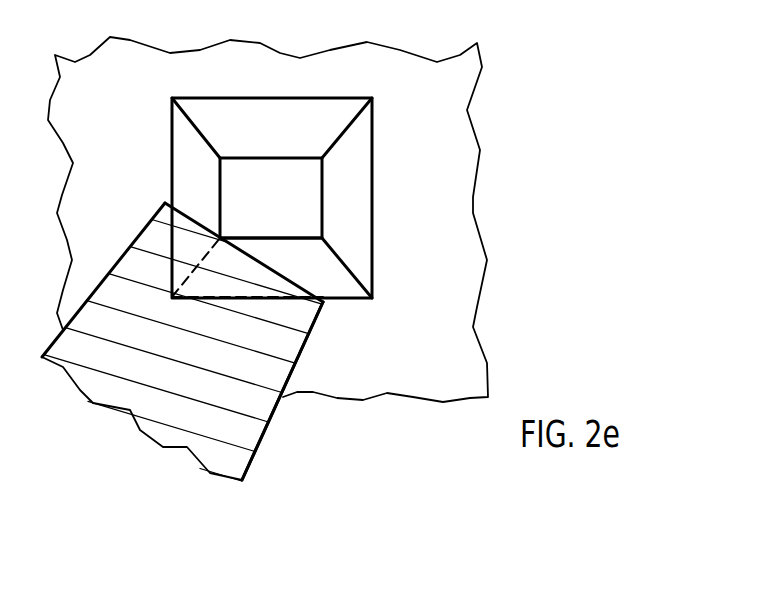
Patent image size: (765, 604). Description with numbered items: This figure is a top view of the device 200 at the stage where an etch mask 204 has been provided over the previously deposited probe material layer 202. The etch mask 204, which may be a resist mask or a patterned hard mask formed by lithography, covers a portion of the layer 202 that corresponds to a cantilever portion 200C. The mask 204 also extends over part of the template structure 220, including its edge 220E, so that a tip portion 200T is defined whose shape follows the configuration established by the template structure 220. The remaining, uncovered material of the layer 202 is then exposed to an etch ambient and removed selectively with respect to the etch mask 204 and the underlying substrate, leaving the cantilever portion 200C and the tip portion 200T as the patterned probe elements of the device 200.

The device 200 is at (517, 47).
The tip portion 200T is at (165, 238).
The cantilever portion 200C is at (279, 415).
The probe material layer 202 is at (448, 206).
The etch mask 204 is at (305, 346).
The template structure 220 is at (380, 121).
The edge 220E is at (207, 254).